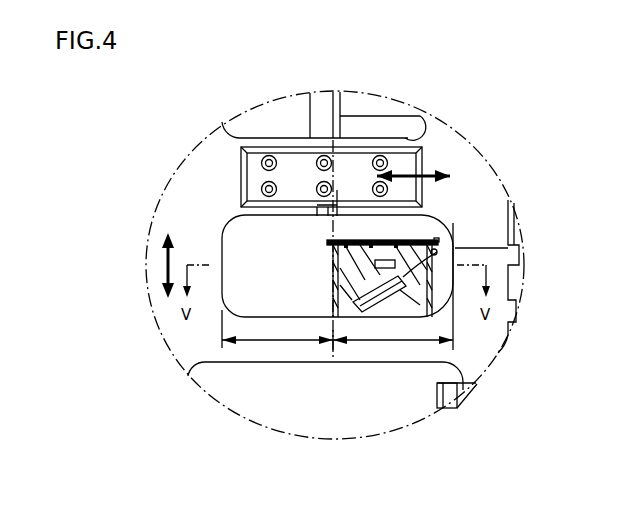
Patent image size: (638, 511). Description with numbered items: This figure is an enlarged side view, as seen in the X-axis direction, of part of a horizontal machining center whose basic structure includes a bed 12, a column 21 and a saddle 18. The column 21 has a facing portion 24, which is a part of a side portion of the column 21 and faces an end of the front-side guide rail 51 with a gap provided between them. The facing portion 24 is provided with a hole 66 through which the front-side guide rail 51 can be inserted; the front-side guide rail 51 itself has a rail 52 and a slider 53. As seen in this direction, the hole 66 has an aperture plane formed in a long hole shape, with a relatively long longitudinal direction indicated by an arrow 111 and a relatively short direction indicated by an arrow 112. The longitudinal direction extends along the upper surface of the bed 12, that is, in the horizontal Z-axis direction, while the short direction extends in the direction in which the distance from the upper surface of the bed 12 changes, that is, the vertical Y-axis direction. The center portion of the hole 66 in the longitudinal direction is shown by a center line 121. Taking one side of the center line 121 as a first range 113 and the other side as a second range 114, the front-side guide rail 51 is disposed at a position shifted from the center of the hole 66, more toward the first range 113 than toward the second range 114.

The center line 121 is at (315, 207).
The saddle 18 is at (357, 228).
The arrow 111 is at (401, 226).
The hole 66 is at (433, 227).
The front-side guide rail 51 is at (323, 267).
The bed 12 is at (323, 304).
The arrow 112 is at (157, 266).
The column 21 is at (168, 351).
The slider 53 is at (439, 241).
The rail 52 is at (455, 262).
The second range 114 is at (278, 345).
The facing portion 24 is at (328, 364).
The first range 113 is at (394, 345).